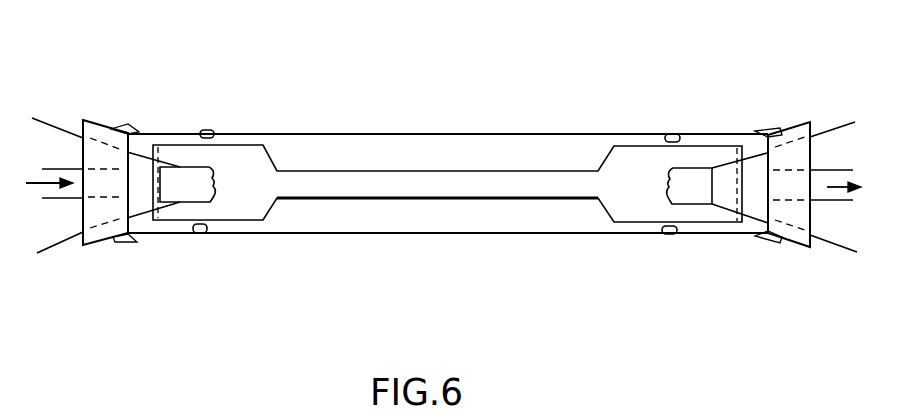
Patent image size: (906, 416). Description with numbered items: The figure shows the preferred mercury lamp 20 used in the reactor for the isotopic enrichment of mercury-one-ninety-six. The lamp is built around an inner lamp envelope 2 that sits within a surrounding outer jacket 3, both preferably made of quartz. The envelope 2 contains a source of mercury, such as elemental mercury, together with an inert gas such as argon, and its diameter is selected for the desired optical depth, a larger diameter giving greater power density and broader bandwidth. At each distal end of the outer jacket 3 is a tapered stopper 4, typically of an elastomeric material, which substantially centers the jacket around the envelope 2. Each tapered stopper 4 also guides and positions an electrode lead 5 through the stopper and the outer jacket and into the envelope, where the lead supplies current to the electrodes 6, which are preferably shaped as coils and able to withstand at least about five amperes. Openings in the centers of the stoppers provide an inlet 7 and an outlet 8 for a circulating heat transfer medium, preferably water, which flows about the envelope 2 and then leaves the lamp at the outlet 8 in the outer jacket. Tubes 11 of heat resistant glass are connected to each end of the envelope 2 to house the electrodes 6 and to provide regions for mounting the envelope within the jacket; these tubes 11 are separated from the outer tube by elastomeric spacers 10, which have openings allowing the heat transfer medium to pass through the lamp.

The inner lamp envelope 2 is at (413, 199).
The outer jacket 3 is at (448, 234).
The tapered stopper 4 is at (113, 243).
The electrode lead 5 is at (62, 129).
The electrode 6 is at (214, 178).
The inlet 7 is at (39, 183).
The outlet 8 is at (854, 187).
The spacer 10 is at (207, 130).
The tube 11 is at (247, 226).
The mercury lamp 20 is at (281, 91).